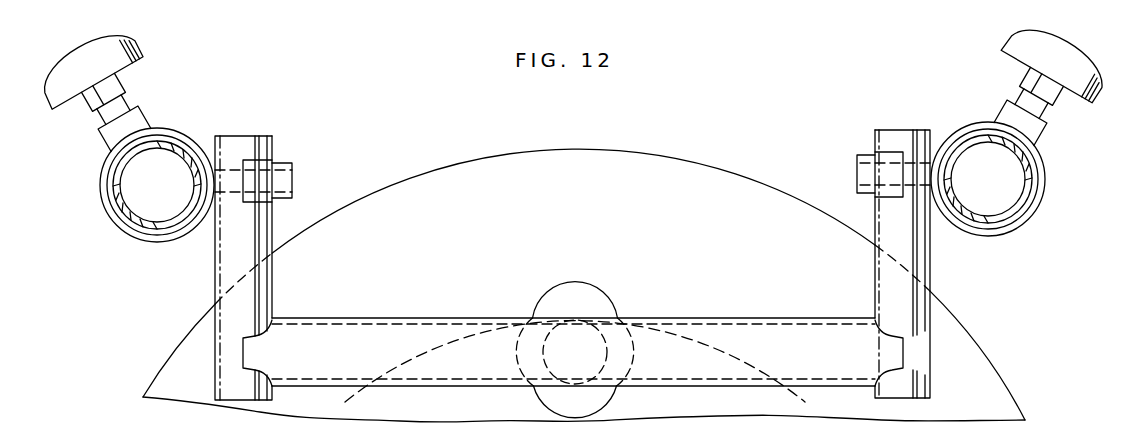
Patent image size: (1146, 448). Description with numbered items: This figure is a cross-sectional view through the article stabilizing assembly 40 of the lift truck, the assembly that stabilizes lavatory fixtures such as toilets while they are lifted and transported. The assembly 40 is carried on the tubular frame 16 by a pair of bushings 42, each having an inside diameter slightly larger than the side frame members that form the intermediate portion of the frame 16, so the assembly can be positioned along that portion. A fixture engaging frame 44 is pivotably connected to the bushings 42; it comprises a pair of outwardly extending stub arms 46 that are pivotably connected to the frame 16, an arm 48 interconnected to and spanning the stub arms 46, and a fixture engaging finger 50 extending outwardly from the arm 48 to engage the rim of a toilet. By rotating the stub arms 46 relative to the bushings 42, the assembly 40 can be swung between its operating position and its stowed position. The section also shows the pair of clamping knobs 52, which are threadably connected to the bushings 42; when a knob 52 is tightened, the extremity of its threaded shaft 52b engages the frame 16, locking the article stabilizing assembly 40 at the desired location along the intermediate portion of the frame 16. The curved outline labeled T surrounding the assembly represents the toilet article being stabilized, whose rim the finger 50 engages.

The tire T is at (742, 183).
The article stabilizing assembly 40 is at (572, 274).
The bushings 42 is at (192, 135).
The fixture engaging frame 44 is at (573, 321).
The stub arms 46 is at (215, 279).
The arm 48 is at (397, 317).
The fixture engaging finger 50 is at (582, 308).
The tubular frame 16 is at (121, 231).
The clamping knobs 52 is at (144, 49).
The threaded shaft 52b is at (128, 113).